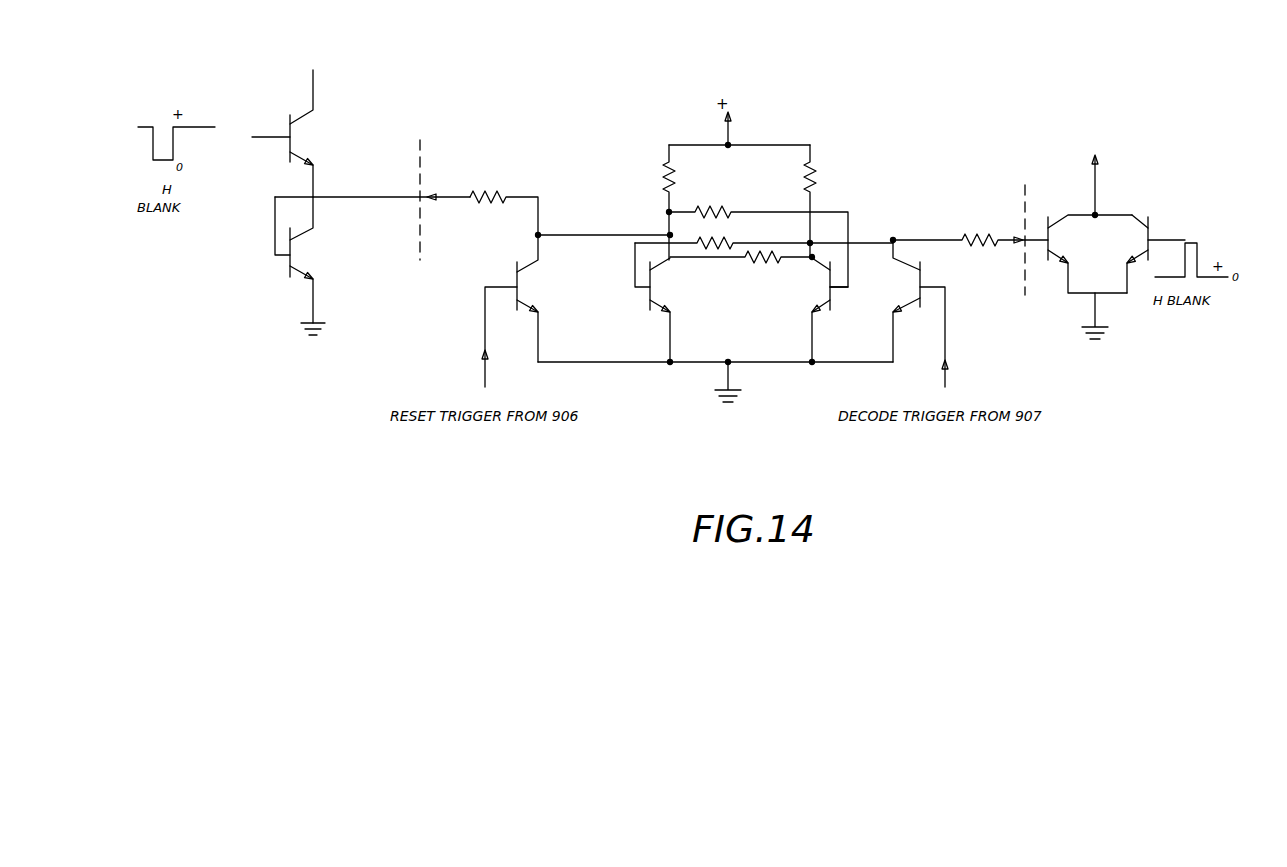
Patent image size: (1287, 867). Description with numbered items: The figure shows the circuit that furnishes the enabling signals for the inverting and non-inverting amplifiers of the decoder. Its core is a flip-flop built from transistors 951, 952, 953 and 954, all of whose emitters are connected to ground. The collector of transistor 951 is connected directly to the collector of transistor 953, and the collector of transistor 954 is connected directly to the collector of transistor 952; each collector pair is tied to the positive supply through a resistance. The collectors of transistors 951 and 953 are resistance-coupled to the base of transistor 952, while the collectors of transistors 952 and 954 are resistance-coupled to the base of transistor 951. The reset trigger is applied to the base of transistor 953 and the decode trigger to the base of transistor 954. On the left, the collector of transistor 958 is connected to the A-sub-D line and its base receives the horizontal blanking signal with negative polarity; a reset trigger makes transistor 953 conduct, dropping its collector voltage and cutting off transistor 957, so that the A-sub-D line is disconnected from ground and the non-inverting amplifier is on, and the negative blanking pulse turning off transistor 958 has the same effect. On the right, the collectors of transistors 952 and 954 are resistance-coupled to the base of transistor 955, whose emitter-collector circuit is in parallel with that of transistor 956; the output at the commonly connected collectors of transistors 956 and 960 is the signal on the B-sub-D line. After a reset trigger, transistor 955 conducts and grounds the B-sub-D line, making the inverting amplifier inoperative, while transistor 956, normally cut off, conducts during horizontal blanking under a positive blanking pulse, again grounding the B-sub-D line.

The transistor 958 is at (312, 119).
The transistor 957 is at (317, 268).
The transistor 960 is at (604, 218).
The transistor 953 is at (538, 268).
The transistor 951 is at (657, 316).
The transistor 952 is at (814, 316).
The transistor 954 is at (914, 265).
The transistor 955 is at (1051, 282).
The transistor 956 is at (1150, 228).